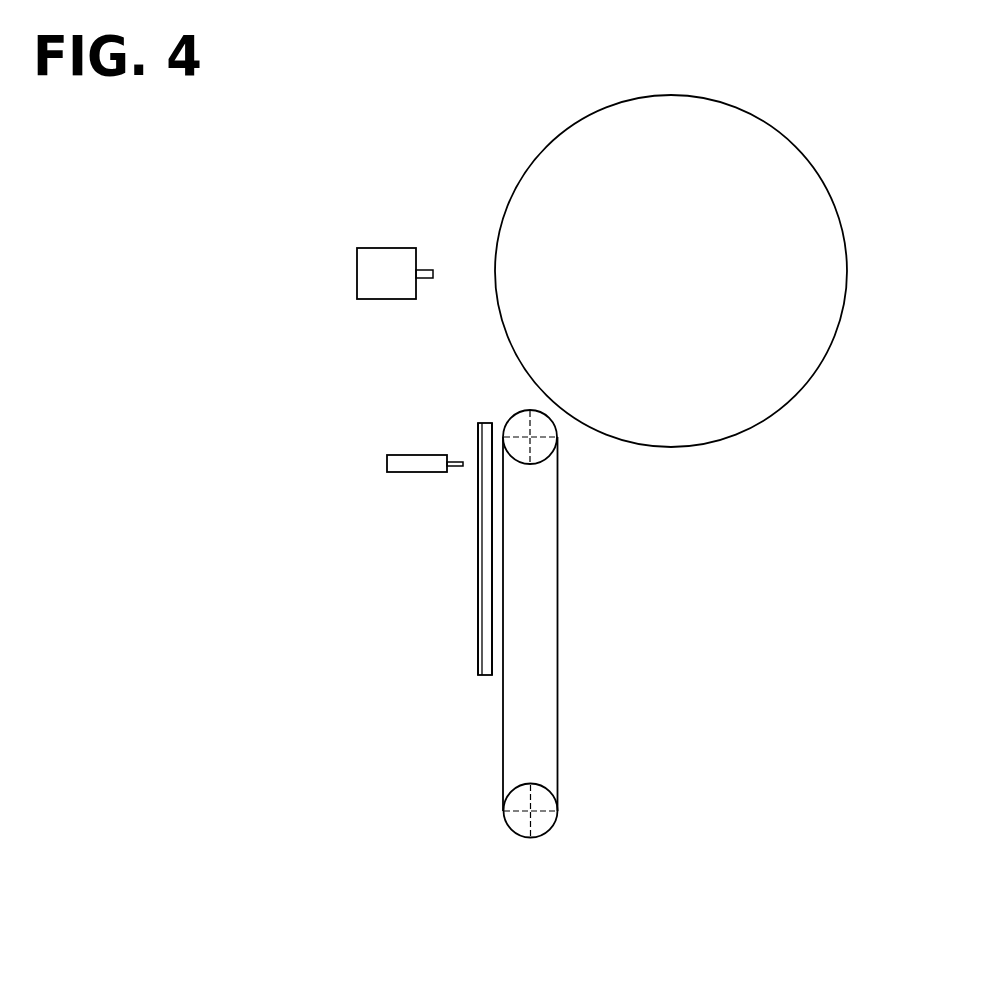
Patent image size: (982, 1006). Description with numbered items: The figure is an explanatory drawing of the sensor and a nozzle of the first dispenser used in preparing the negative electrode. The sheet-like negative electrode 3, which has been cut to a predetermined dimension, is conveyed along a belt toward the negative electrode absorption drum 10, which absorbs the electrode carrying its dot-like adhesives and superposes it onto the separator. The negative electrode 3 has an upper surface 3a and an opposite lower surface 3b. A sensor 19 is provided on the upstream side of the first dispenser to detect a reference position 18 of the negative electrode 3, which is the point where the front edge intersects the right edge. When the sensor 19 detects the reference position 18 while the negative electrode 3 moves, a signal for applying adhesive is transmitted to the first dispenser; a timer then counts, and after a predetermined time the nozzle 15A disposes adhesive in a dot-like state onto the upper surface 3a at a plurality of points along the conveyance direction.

The negative electrode absorption drum 10 is at (777, 159).
The nozzle 15A is at (368, 272).
The reference position 18 is at (442, 559).
The sensor 19 is at (407, 464).
The negative electrode 3 is at (442, 595).
The upper surface 3a is at (478, 652).
The lower surface 3b is at (495, 662).